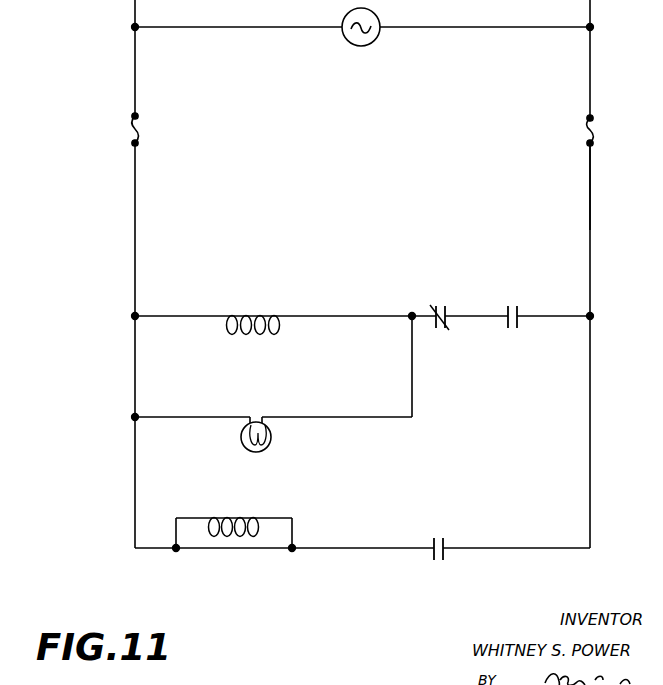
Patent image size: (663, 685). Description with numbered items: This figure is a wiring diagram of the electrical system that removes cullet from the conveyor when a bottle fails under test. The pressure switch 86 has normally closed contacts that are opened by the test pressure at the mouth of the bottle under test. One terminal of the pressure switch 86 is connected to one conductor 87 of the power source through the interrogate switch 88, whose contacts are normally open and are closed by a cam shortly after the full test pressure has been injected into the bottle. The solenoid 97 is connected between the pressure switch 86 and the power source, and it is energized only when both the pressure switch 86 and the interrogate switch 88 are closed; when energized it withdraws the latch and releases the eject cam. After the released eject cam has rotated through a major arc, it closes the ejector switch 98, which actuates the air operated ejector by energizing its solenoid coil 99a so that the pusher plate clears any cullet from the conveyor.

The pressure switch 86 is at (432, 330).
The conductor 87 is at (591, 163).
The interrogate switch 88 is at (518, 328).
The solenoid 97 is at (251, 315).
The ejector switch 98 is at (445, 540).
The solenoid coil 99a is at (231, 537).